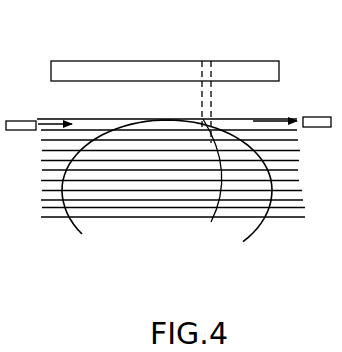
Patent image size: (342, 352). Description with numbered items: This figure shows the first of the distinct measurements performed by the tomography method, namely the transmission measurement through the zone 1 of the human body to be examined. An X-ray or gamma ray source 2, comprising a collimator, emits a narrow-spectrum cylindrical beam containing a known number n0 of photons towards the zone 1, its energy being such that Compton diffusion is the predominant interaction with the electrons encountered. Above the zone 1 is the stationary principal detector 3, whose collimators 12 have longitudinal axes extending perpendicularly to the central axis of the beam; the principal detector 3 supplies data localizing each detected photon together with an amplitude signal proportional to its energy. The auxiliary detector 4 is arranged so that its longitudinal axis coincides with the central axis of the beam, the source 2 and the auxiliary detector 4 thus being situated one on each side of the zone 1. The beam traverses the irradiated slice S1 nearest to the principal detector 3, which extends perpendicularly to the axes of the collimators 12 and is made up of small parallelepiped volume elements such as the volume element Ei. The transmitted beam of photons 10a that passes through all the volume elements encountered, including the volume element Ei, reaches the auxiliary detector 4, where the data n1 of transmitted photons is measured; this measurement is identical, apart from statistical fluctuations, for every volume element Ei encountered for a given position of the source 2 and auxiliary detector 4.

The zone 1 is at (87, 225).
The X-ray or gamma ray source 2 is at (18, 130).
The stationary principal detector 3 is at (80, 72).
The auxiliary detector 4 is at (315, 118).
The transmitted beam of photons 10a is at (234, 118).
The collimators 12 is at (208, 65).
The irradiated slice S1 is at (168, 125).
The volume element Ei is at (205, 180).
The number of photons emitted n0 is at (55, 108).
The data of transmitted photons n1 is at (275, 107).